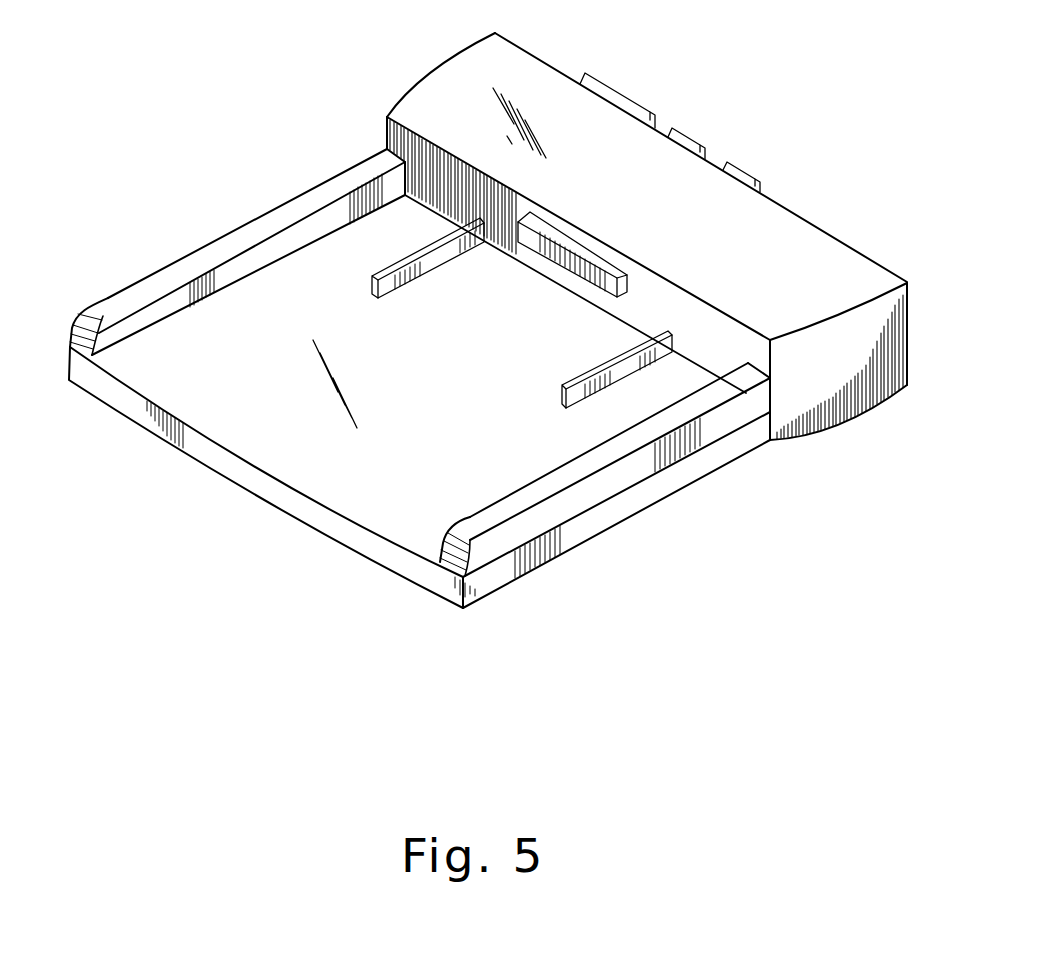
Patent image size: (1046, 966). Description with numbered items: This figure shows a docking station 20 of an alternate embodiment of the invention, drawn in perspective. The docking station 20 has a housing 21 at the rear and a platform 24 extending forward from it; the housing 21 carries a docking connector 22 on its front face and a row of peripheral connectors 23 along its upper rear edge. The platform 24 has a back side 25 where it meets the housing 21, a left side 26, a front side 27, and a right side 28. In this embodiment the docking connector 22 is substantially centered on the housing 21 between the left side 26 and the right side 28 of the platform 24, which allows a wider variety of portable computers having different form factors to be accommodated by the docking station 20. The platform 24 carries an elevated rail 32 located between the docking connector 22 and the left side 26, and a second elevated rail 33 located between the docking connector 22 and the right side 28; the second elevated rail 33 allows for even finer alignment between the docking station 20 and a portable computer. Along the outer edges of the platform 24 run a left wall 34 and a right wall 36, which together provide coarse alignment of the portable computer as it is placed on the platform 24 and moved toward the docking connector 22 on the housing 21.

The docking station 20 is at (343, 77).
The housing 21 is at (475, 94).
The docking connector 22 is at (615, 262).
The peripheral connectors 23 is at (754, 176).
The platform 24 is at (450, 434).
The back side 25 is at (562, 283).
The left side 26 is at (117, 338).
The front side 27 is at (262, 496).
The right side 28 is at (730, 457).
The elevated rail 32 is at (425, 263).
The second elevated rail 33 is at (622, 380).
The left wall 34 is at (277, 246).
The right wall 36 is at (742, 412).